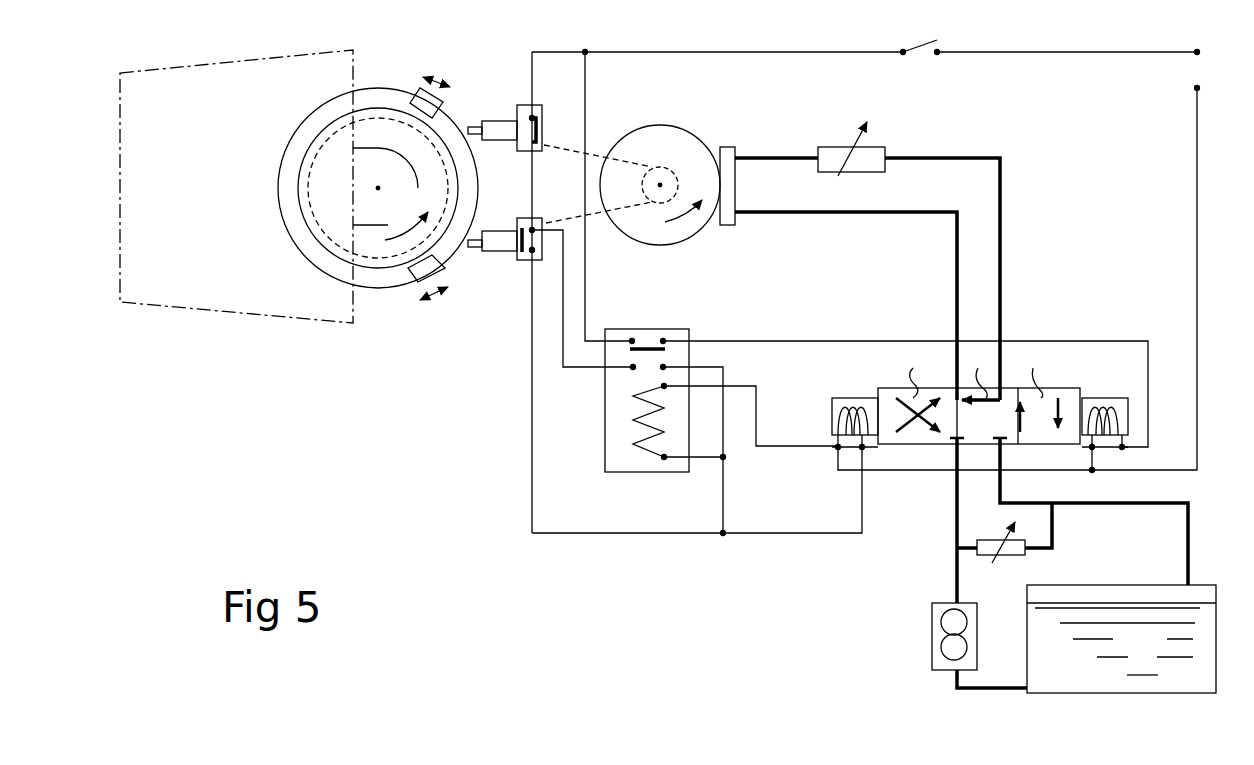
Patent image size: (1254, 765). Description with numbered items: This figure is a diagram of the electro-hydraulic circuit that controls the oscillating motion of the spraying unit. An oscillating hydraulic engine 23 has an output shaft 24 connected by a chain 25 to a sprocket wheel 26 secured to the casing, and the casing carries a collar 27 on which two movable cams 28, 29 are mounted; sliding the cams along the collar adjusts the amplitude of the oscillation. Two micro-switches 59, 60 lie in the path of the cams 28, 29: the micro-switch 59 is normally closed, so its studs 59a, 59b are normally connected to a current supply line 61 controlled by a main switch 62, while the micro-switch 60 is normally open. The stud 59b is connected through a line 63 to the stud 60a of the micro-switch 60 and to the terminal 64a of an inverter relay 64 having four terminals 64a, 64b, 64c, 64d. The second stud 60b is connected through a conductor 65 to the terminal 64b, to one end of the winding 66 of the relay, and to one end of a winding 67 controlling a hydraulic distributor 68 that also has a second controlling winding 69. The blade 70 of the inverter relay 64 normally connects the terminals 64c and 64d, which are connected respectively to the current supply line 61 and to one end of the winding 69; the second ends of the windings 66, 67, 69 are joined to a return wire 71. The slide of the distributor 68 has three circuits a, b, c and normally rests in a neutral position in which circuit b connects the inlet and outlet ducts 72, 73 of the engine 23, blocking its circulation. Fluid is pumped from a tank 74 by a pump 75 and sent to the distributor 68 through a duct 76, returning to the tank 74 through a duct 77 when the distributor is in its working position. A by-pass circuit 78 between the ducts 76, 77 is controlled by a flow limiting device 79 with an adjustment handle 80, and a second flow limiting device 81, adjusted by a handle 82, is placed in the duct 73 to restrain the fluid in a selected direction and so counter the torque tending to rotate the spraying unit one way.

The oscillating hydraulic engine 23 is at (668, 126).
The output shaft 24 is at (668, 170).
The chain 25 is at (598, 157).
The sprocket wheel 26 is at (318, 230).
The collar 27 is at (292, 138).
The cam 28 is at (425, 90).
The cam 29 is at (414, 282).
The micro-switch 59 is at (517, 112).
The stud 59a is at (532, 116).
The stud 59b is at (542, 146).
The micro-switch 60 is at (515, 258).
The stud 60a is at (533, 229).
The stud 60b is at (534, 250).
The current supply line 61 is at (790, 52).
The main switch 62 is at (928, 44).
The line 63 is at (530, 165).
The inverter relay 64 is at (610, 462).
The terminal 64a is at (633, 368).
The terminal 64b is at (664, 367).
The terminal 64c is at (632, 340).
The terminal 64d is at (664, 341).
The conductor 65 is at (531, 480).
The winding 66 is at (648, 422).
The winding 67 is at (845, 396).
The hydraulic distributor 68 is at (1072, 392).
The winding 69 is at (1115, 396).
The blade 70 is at (650, 345).
The return wire 71 is at (1168, 472).
The inlet duct 72 is at (956, 290).
The outlet duct 73 is at (1005, 258).
The tank 74 is at (1090, 680).
The pump 75 is at (932, 663).
The duct 76 is at (957, 520).
The duct 77 is at (1022, 502).
The by-pass circuit 78 is at (1053, 540).
The flow limiting device 79 is at (986, 540).
The adjustment handle 80 is at (993, 562).
The second flow limiting device 81 is at (885, 153).
The handle 82 is at (858, 124).